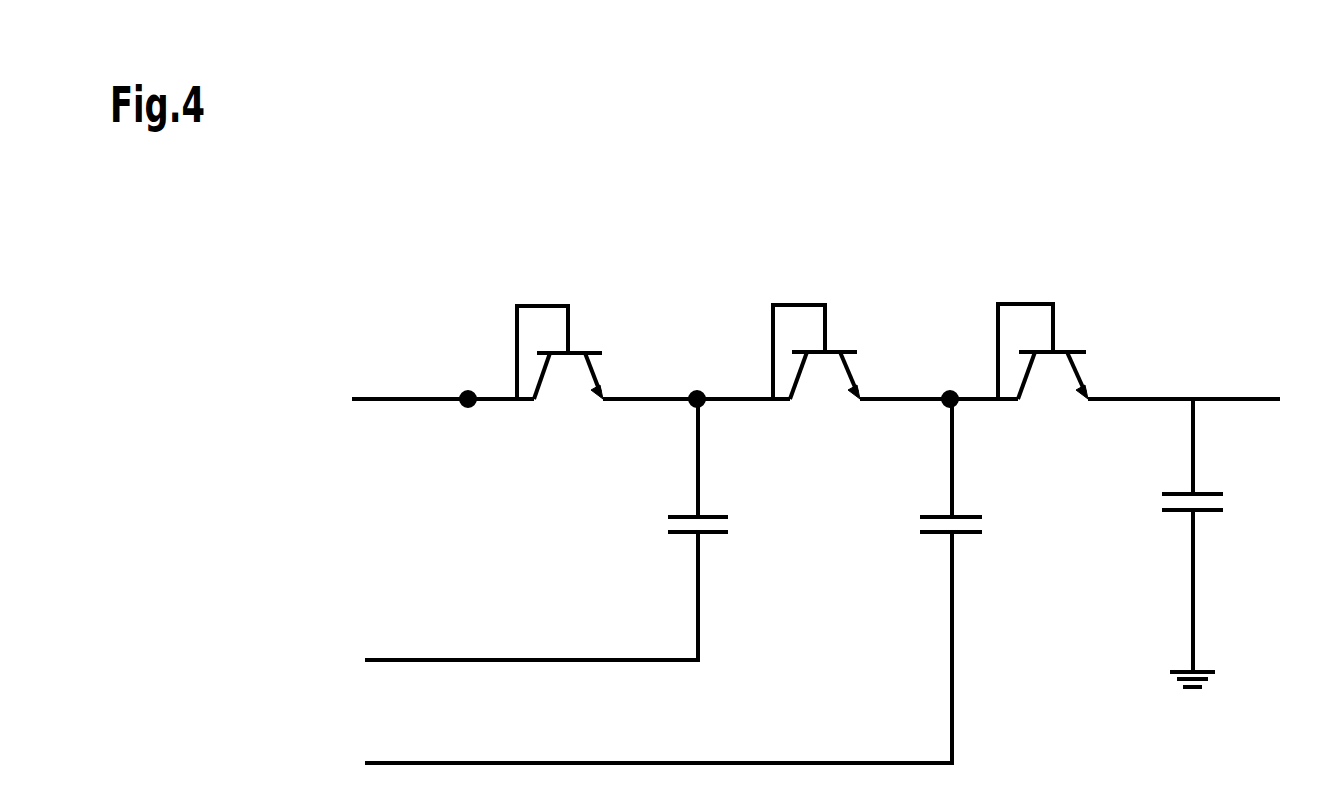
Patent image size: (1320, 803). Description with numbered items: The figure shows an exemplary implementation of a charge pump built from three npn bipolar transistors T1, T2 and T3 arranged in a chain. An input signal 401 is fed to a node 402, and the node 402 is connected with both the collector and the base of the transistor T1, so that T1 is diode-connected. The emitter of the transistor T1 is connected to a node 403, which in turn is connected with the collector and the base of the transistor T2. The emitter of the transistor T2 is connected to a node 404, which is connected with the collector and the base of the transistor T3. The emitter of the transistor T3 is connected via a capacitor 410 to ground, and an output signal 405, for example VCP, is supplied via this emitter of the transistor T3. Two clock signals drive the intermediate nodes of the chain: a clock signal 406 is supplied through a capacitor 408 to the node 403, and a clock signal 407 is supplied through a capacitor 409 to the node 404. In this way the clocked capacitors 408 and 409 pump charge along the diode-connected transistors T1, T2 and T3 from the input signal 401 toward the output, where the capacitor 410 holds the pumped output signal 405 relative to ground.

The input signal 401 is at (443, 374).
The node 402 is at (473, 423).
The node 403 is at (696, 382).
The node 404 is at (950, 382).
The output signal 405 is at (1193, 374).
The clock signal 406 is at (527, 641).
The clock signal 407 is at (654, 743).
The capacitor 408 is at (687, 529).
The capacitor 409 is at (940, 581).
The capacitor 410 is at (1181, 543).
The npn bipolar transistor T1 is at (560, 370).
The npn bipolar transistor T2 is at (816, 370).
The npn bipolar transistor T3 is at (1043, 369).